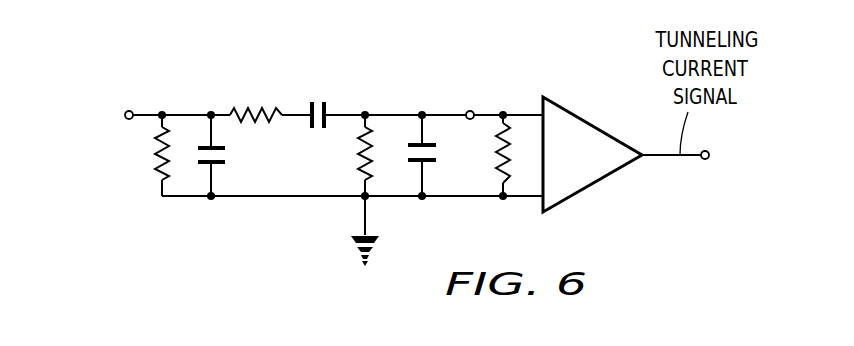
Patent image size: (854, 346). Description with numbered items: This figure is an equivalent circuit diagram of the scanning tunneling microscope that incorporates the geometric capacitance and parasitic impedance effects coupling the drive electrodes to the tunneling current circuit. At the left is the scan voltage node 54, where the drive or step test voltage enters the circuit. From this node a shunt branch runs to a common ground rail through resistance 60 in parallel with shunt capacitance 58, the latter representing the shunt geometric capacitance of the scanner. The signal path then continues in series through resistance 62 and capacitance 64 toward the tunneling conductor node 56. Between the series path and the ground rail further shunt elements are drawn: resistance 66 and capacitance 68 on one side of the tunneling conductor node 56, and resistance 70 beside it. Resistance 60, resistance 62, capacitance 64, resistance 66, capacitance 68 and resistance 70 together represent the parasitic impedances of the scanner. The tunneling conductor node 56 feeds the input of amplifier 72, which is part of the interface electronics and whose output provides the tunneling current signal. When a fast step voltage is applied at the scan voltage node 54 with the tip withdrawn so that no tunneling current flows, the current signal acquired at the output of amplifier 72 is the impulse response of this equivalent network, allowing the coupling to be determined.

The scan voltage node 54 is at (131, 111).
The tunneling conductor node 56 is at (470, 110).
The shunt capacitance 58 is at (221, 163).
The resistance 60 is at (157, 159).
The resistance 62 is at (246, 108).
The capacitance 64 is at (328, 108).
The resistance 66 is at (358, 161).
The capacitance 68 is at (434, 155).
The resistance 70 is at (497, 137).
The amplifier 72 is at (583, 178).